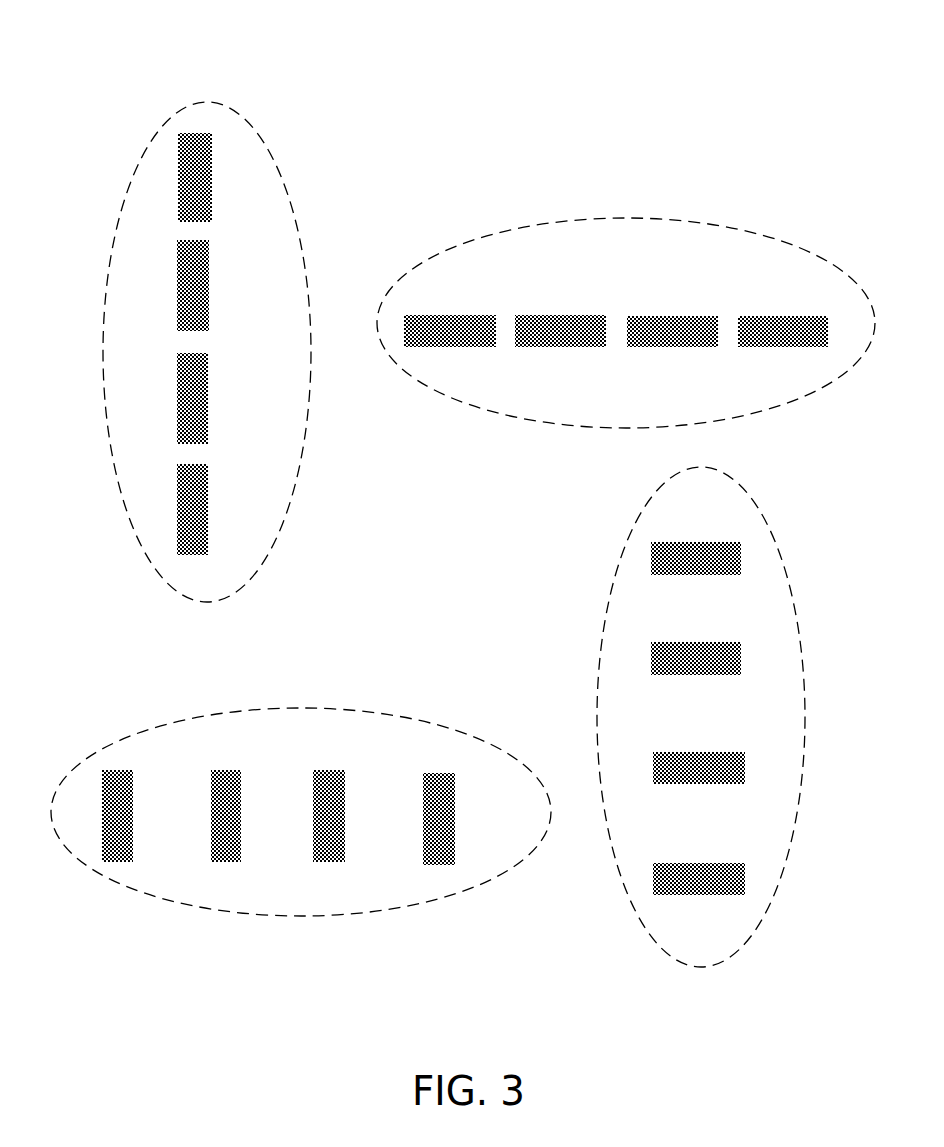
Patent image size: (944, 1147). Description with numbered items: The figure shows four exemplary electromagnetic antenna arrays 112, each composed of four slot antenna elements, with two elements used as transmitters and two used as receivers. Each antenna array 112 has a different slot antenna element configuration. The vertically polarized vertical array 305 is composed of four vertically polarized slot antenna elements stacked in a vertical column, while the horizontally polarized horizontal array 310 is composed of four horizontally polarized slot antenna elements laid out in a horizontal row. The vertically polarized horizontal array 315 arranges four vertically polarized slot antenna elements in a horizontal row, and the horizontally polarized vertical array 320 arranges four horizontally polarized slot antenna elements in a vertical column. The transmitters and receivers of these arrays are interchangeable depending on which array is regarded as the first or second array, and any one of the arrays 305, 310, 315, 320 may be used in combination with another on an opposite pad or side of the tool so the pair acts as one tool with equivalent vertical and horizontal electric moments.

The electromagnetic antenna array 112 is at (506, 145).
The vertically polarized vertical array (VPVA) 305 is at (281, 176).
The horizontally polarized horizontal array (HPHA) 310 is at (717, 227).
The vertically polarized horizontal array (VPHA) 315 is at (223, 713).
The horizontally polarized vertical array (HPVA) 320 is at (773, 537).